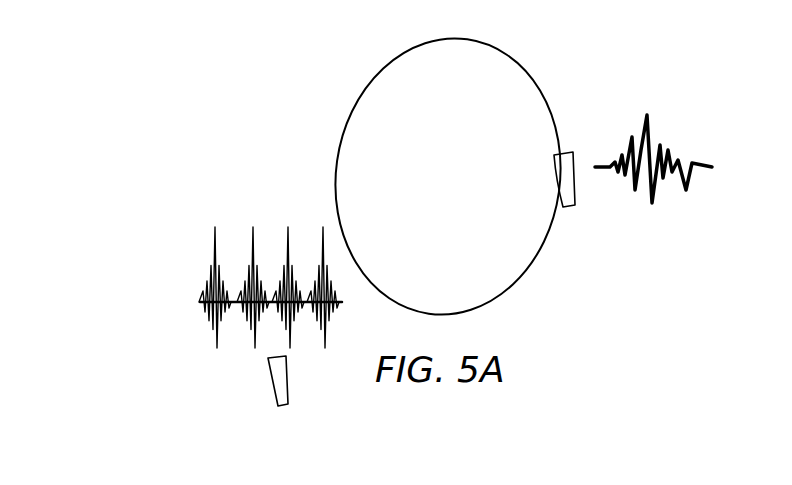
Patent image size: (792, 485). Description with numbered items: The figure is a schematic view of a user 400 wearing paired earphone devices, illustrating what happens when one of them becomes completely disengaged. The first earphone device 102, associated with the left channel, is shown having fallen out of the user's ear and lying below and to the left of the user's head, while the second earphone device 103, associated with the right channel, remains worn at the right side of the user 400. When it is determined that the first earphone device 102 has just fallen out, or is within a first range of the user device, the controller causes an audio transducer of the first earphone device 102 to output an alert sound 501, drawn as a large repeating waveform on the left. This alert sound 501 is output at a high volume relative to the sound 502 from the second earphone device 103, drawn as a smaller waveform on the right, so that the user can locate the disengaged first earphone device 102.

The user 400 is at (532, 265).
The second earphone device 103 is at (568, 190).
The first earphone device 102 is at (268, 373).
The alert sound 501 is at (215, 247).
The sound from the second earphone device 502 is at (683, 165).